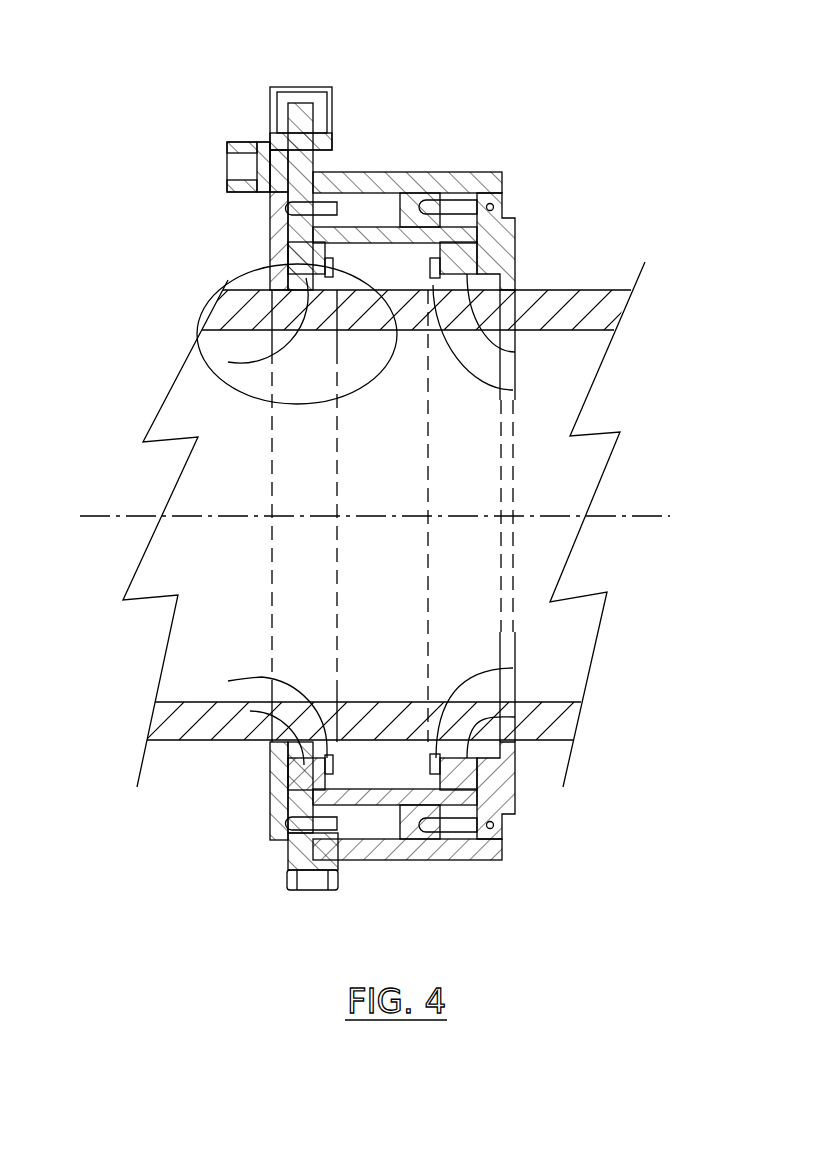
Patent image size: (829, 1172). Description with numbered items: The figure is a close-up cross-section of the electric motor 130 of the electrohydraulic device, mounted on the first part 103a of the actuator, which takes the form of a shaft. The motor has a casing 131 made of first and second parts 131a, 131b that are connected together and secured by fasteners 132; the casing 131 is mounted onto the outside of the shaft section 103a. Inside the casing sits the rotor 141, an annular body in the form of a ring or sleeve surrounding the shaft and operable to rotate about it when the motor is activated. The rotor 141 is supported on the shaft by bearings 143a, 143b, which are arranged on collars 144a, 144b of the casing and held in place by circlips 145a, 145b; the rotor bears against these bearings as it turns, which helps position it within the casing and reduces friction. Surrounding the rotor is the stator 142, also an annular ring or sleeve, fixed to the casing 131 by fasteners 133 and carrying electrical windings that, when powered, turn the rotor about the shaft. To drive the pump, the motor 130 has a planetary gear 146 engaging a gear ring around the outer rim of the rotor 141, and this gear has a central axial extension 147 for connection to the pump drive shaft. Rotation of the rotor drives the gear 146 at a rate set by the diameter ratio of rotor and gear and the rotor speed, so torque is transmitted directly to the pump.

The first part of the actuator 103a is at (555, 462).
The electric motor 130 is at (483, 147).
The casing 131 is at (502, 175).
The first part of the casing 131a is at (270, 230).
The second part of the casing 131b is at (517, 255).
The fasteners 132 is at (297, 885).
The fasteners 133 is at (503, 203).
The rotor 141 is at (372, 235).
The stator 142 is at (414, 188).
The bearing 143a is at (228, 282).
The bearing 143b is at (495, 265).
The collar 144a is at (228, 362).
The collar 144b is at (515, 352).
The circlip 145a is at (322, 403).
The circlip 145b is at (513, 390).
The planetary gear 146 is at (272, 112).
The central axial extension 147 is at (240, 143).